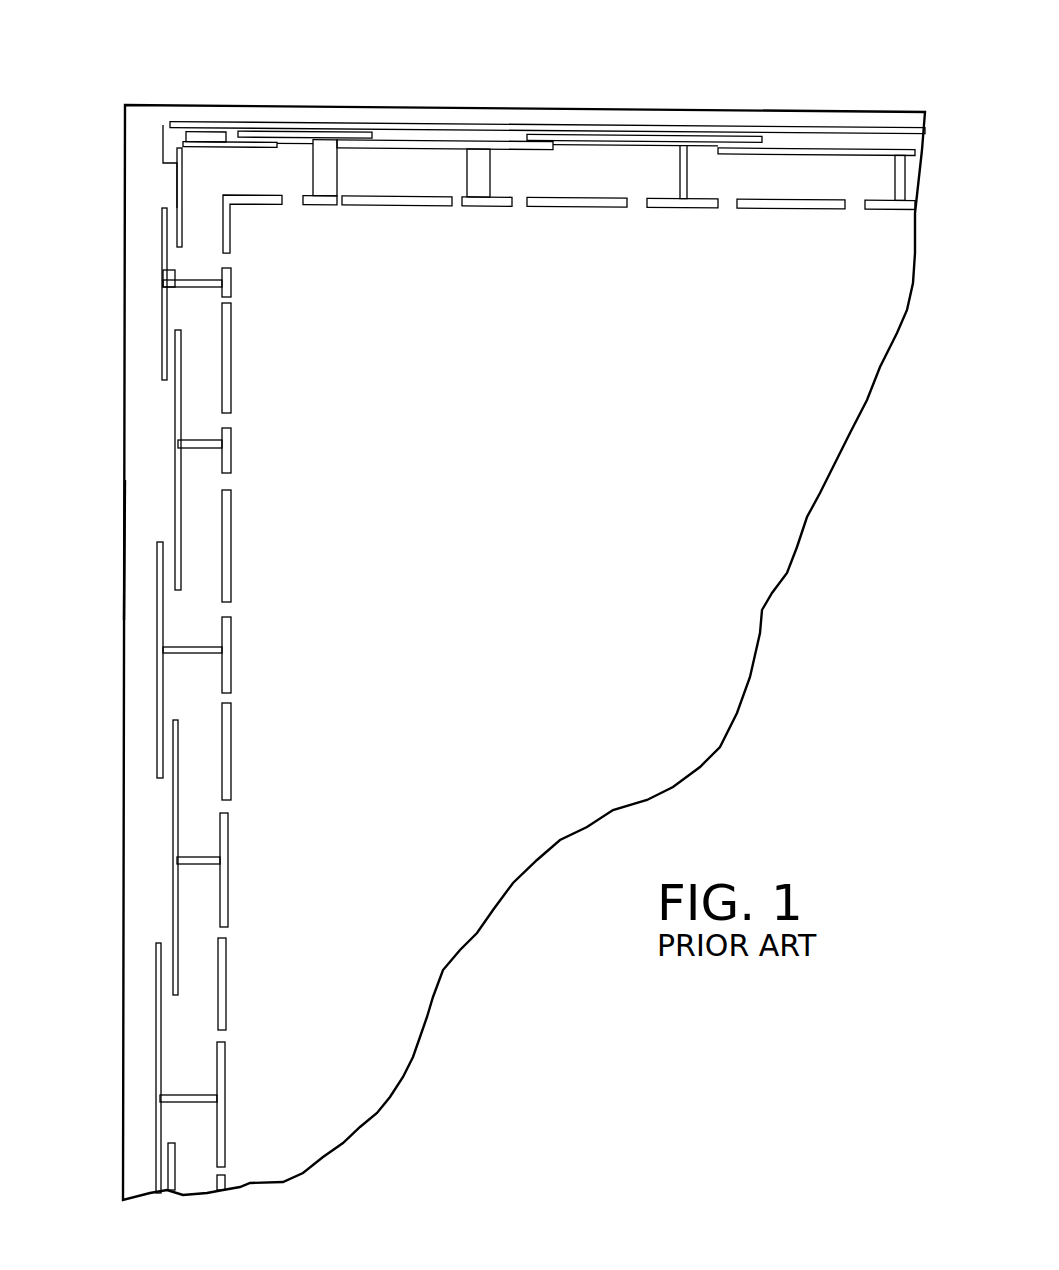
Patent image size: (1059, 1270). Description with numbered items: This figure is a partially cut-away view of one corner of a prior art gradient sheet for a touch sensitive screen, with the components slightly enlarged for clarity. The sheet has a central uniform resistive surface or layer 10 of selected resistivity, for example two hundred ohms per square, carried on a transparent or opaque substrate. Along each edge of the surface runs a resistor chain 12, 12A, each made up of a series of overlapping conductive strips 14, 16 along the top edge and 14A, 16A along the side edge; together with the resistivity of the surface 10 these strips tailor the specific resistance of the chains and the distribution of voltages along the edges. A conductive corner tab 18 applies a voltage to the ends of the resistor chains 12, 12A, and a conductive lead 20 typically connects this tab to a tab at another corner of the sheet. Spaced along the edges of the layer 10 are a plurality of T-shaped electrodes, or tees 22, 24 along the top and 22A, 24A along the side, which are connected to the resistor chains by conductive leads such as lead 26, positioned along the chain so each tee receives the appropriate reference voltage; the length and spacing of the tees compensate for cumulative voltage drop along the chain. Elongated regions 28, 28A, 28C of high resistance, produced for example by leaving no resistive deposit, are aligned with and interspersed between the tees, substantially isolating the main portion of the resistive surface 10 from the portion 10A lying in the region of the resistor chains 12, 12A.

The resistive surface 10 is at (467, 610).
The portion of resistive surface 10A is at (140, 549).
The resistor chain 12 is at (592, 133).
The resistor chain 12A is at (150, 708).
The conductive strip 14 is at (210, 142).
The conductive strip 14A is at (175, 417).
The conductive strip 16 is at (273, 137).
The conductive strip 16A is at (162, 347).
The conductive corner tab 18 is at (163, 157).
The conductive lead 20 is at (387, 127).
The T-shaped electrode 22 is at (327, 192).
The T-shaped electrode 22A is at (220, 287).
The T-shaped electrode 24 is at (468, 192).
The T-shaped electrode 24A is at (222, 462).
The conductive lead 26 is at (183, 275).
The elongated region of high resistance 28 is at (797, 203).
The elongated region of high resistance 28A is at (218, 720).
The elongated region of high resistance 28C is at (222, 217).